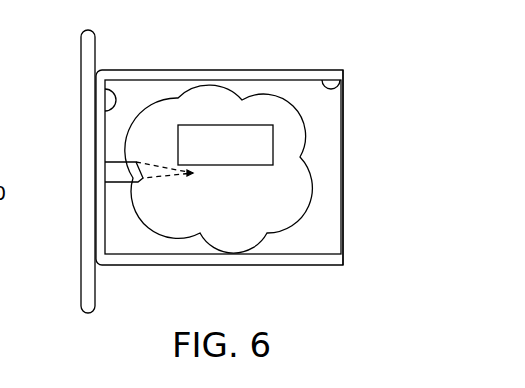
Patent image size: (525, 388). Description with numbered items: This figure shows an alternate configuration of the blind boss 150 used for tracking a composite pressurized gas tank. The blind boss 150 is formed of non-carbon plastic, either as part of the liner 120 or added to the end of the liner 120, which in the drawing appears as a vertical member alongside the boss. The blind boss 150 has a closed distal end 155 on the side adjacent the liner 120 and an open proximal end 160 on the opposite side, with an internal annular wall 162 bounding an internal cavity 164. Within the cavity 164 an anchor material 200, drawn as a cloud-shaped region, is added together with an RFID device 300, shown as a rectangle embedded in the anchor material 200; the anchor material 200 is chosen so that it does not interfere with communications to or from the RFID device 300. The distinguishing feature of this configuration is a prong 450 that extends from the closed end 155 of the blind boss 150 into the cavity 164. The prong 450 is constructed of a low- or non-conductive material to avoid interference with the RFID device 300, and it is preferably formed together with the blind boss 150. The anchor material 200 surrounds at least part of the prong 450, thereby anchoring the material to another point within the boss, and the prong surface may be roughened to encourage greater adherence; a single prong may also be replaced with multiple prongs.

The liner 120 is at (80, 64).
The blind boss 150 is at (206, 58).
The closed distal end 155 is at (104, 88).
The open proximal end 160 is at (350, 172).
The internal annular wall 162 is at (341, 85).
The internal cavity 164 is at (223, 167).
The anchor material 200 is at (219, 169).
The RFID device 300 is at (225, 145).
The prong 450 is at (130, 186).